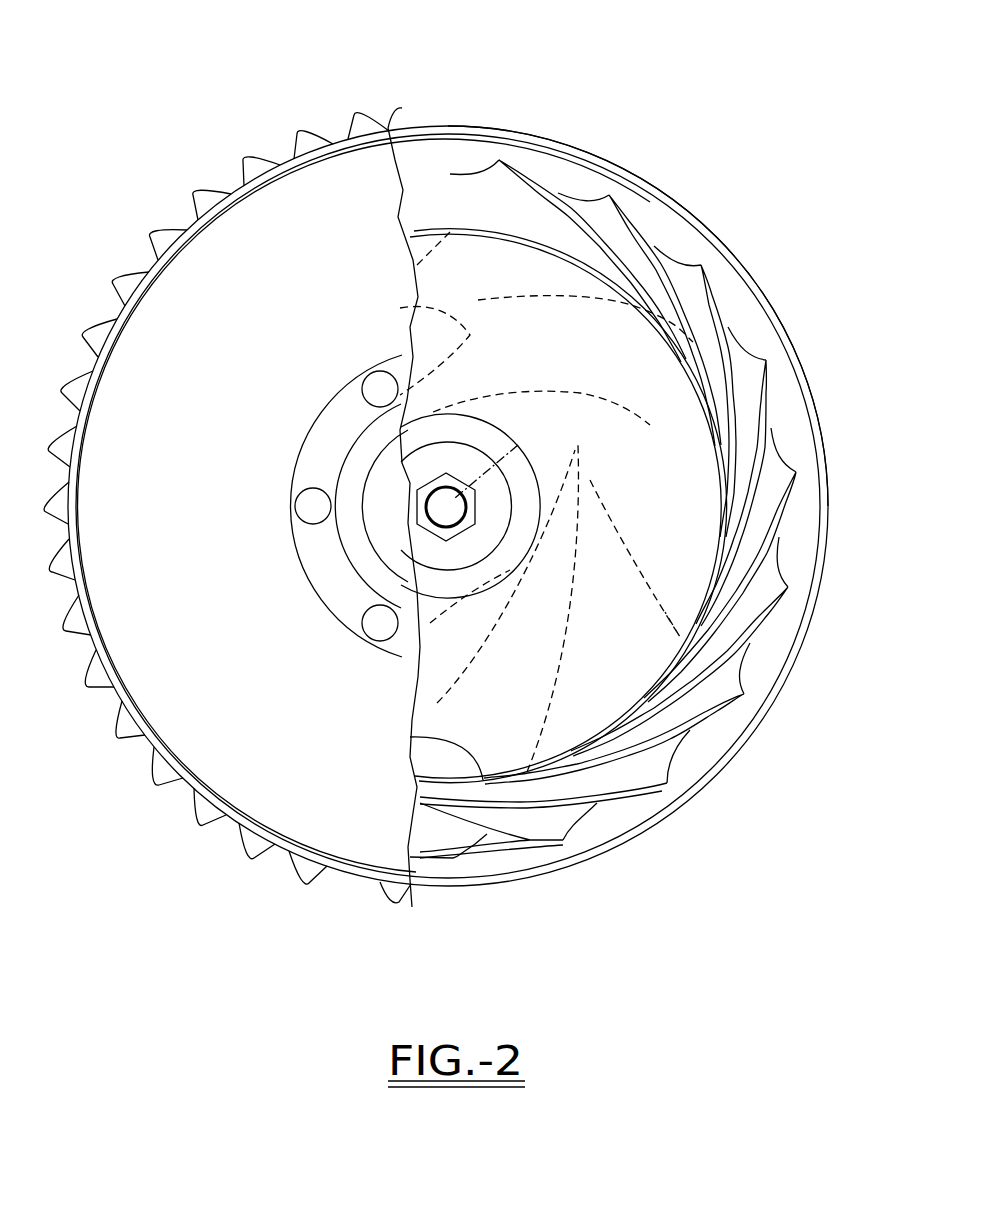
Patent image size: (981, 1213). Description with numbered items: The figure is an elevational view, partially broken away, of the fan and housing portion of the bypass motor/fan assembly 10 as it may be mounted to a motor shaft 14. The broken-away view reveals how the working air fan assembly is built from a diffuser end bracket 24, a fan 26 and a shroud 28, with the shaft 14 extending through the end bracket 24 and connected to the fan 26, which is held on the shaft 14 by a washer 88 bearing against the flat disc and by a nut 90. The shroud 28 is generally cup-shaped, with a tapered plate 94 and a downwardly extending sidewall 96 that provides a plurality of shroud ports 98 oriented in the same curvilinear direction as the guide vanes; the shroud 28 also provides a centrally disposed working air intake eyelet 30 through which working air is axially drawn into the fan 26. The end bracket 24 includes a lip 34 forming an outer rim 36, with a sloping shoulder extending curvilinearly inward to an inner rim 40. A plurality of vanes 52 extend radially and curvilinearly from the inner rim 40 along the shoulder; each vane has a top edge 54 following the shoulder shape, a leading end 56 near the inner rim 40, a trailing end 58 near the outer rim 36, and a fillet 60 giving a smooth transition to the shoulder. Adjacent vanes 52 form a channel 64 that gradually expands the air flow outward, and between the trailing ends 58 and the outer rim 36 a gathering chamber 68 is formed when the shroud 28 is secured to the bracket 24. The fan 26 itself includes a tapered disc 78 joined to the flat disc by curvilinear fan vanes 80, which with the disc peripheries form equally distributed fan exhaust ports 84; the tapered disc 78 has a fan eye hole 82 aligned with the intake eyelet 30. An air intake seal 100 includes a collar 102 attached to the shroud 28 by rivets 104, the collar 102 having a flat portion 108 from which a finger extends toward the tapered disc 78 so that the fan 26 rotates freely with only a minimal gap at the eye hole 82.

The bypass motor/fan assembly 10 is at (312, 94).
The shaft 14 is at (518, 445).
The diffuser end bracket 24 is at (617, 168).
The fan 26 is at (497, 250).
The shroud 28 is at (238, 192).
The working air intake eyelet 30 is at (389, 543).
The lip 34 is at (722, 245).
The outer rim 36 is at (693, 213).
The inner rim 40 is at (415, 740).
The vanes 52 is at (625, 208).
The top edge 54 is at (677, 733).
The leading end 56 is at (720, 480).
The trailing end 58 is at (702, 264).
The fillet 60 is at (668, 768).
The channel 64 is at (719, 687).
The gathering chamber 68 is at (482, 854).
The tapered disc 78 is at (495, 360).
The curvilinear fan vanes 80 is at (400, 308).
The fan eye hole 82 is at (511, 547).
The fan exhaust ports 84 is at (658, 330).
The washer 88 is at (473, 562).
The nut 90 is at (475, 500).
The tapered plate 94 is at (228, 360).
The sidewall 96 is at (187, 213).
The shroud ports 98 is at (123, 272).
The air intake seal 100 is at (363, 644).
The collar 102 is at (363, 460).
The rivets 104 is at (303, 508).
The flat portion 108 is at (347, 540).